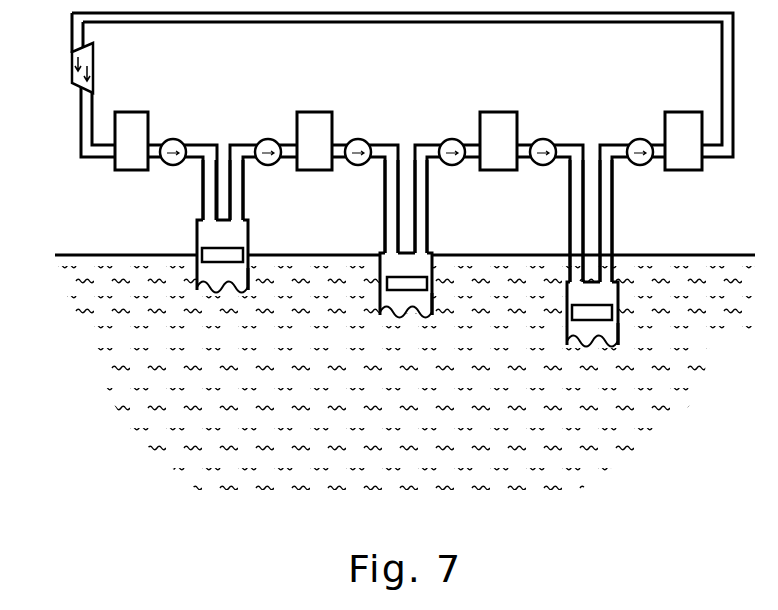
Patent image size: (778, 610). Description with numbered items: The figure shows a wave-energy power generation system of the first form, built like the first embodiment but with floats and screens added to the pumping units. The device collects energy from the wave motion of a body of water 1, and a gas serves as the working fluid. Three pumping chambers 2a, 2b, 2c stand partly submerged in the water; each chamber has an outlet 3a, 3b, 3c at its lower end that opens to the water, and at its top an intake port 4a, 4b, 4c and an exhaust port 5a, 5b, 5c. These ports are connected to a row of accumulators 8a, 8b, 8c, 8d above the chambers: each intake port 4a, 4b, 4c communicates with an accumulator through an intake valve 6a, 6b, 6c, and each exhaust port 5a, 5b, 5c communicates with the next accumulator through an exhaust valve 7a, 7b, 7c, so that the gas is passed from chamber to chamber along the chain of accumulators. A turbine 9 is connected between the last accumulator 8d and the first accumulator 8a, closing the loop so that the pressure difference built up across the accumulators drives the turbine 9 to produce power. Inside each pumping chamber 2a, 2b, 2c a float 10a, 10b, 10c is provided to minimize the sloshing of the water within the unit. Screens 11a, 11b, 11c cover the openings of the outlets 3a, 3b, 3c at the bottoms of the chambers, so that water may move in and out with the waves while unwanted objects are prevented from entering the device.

The body of water 1 is at (194, 406).
The pumping chamber 2a is at (213, 284).
The pumping chamber 2b is at (398, 322).
The pumping chamber 2c is at (599, 354).
The outlet 3a is at (247, 277).
The outlet 3b is at (423, 299).
The outlet 3c is at (619, 329).
The intake port 4a is at (197, 229).
The intake port 4b is at (387, 250).
The intake port 4c is at (573, 276).
The exhaust port 5a is at (248, 229).
The exhaust port 5b is at (425, 250).
The exhaust port 5c is at (611, 276).
The intake valve 6a is at (183, 137).
The intake valve 6b is at (369, 137).
The intake valve 6c is at (555, 137).
The exhaust valve 7a is at (261, 137).
The exhaust valve 7b is at (444, 137).
The exhaust valve 7c is at (628, 137).
The accumulator 8a is at (124, 111).
The accumulator 8b is at (308, 111).
The accumulator 8c is at (504, 111).
The accumulator 8d is at (695, 111).
The turbine 9 is at (72, 70).
The float 10a is at (205, 256).
The float 10b is at (386, 299).
The float 10c is at (567, 326).
The screen 11a is at (206, 292).
The screen 11b is at (390, 318).
The screen 11c is at (578, 347).